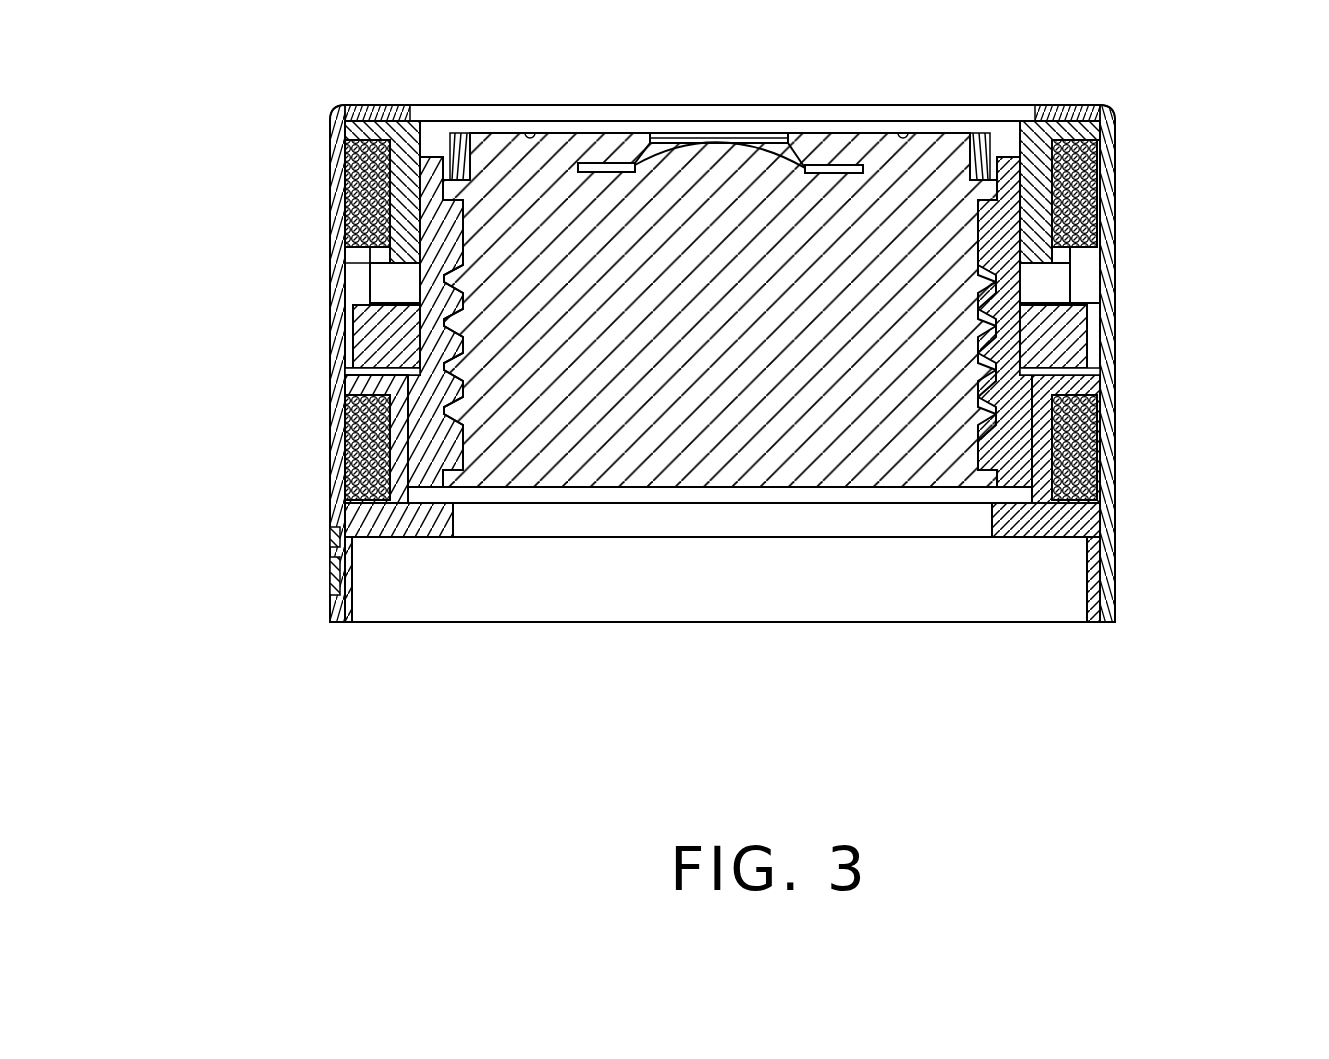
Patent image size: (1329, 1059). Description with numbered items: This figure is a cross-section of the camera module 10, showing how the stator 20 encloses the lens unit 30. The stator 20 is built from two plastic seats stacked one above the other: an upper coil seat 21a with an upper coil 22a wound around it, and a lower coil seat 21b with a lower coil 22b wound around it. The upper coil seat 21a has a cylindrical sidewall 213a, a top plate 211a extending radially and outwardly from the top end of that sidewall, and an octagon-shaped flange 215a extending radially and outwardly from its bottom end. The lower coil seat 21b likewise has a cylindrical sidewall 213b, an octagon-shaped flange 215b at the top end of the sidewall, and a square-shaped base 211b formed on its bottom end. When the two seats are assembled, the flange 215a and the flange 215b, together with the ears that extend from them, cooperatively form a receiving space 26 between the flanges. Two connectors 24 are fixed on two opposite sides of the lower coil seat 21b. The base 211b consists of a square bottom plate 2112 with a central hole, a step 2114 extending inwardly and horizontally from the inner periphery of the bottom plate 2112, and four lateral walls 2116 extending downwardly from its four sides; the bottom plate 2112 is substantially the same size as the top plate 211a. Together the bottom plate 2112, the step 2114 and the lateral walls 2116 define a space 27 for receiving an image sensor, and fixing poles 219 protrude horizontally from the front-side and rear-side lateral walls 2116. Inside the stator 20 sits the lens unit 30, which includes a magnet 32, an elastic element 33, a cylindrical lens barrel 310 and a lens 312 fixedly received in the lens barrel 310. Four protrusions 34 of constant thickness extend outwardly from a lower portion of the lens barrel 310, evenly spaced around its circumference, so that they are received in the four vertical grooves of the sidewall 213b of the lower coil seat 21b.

The housing 10 is at (1110, 122).
The stator 20 is at (100, 177).
The upper coil seat 21a is at (191, 117).
The top plate 211a is at (352, 130).
The cylindrical sidewall 213a is at (360, 200).
The flange 215a is at (356, 253).
The receiving space 26 is at (385, 292).
The lower coil seat 21b is at (191, 377).
The flange 215b is at (352, 378).
The cylindrical sidewall 213b is at (360, 440).
The base 211b is at (356, 518).
The step 2114 is at (1040, 500).
The bottom plate 2112 is at (1003, 523).
The lateral walls 2116 is at (1090, 556).
The fixing poles 219 is at (335, 556).
The connectors 24 is at (335, 578).
The upper coil 22a is at (387, 106).
The lower coil 22b is at (377, 385).
The space 27 is at (648, 568).
The lens unit 30 is at (1214, 149).
The lens 312 is at (1085, 168).
The lens barrel 310 is at (1022, 207).
The magnet 32 is at (1063, 322).
The elastic element 33 is at (1030, 375).
The protrusions 34 is at (1087, 368).